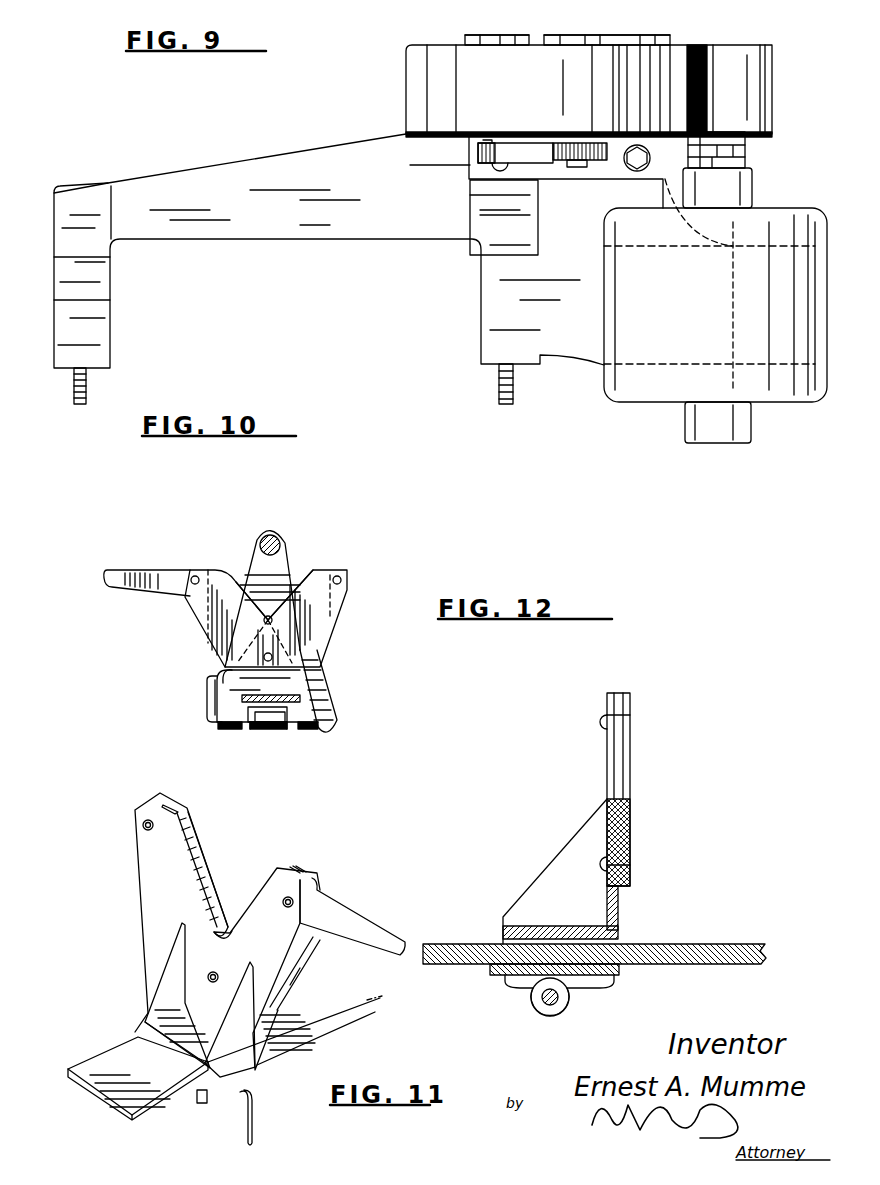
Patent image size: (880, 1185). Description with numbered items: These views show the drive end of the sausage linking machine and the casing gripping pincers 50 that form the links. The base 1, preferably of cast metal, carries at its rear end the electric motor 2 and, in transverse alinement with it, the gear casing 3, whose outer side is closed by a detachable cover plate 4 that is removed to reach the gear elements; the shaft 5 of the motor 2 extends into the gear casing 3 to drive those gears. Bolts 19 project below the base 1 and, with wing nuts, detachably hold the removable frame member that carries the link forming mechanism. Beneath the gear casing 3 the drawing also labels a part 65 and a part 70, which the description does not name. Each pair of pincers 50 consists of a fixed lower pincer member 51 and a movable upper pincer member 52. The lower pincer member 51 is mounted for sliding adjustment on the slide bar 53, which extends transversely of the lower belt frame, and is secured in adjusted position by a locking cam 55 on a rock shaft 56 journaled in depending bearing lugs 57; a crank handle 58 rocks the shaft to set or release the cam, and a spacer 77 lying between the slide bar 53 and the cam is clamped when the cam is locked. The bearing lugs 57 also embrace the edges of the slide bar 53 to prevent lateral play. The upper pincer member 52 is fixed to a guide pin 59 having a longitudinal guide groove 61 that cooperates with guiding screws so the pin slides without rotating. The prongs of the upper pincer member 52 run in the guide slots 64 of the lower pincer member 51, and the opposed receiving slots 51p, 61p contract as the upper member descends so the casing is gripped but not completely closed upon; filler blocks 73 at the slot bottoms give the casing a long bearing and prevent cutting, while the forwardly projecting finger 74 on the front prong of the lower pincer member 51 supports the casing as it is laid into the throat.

In FIG. 9, the base 1 is at (338, 229).
In FIG. 9, the electric motor 2 is at (676, 339).
In FIG. 9, the gear casing 3 is at (589, 86).
In FIG. 9, the detachable cover plate 4 is at (447, 50).
In FIG. 9, the motor shaft 5 is at (745, 163).
In FIG. 9, the bolts 19 is at (79, 407).
In FIG. 9, the bushing 65 is at (482, 158).
In FIG. 9, the knurled nut 70 is at (587, 167).
In FIG. 10, the pincers 50 is at (249, 561).
In FIG. 10, the lower pincer member 51 is at (337, 595).
In FIG. 11, the lower pincer member 51 is at (157, 927).
In FIG. 12, the lower pincer member 51 is at (570, 850).
In FIG. 10, the receiving slot 51p is at (277, 593).
In FIG. 10, the upper pincer member 52 is at (262, 568).
In FIG. 10, the slide bar 53 is at (297, 700).
In FIG. 11, the slide bar 53 is at (323, 1010).
In FIG. 12, the slide bar 53 is at (661, 953).
In FIG. 10, the locking cam 55 is at (270, 728).
In FIG. 12, the locking cam 55 is at (543, 992).
In FIG. 10, the rock shaft 56 is at (293, 728).
In FIG. 12, the rock shaft 56 is at (548, 1012).
In FIG. 10, the bearing lug 57 is at (227, 728).
In FIG. 10, the crank handle 58 is at (210, 697).
In FIG. 11, the crank handle 58 is at (255, 1126).
In FIG. 10, the guide pin 59 is at (287, 542).
In FIG. 10, the longitudinal guide groove 61 is at (272, 532).
In FIG. 10, the receiving slot 61p is at (291, 690).
In FIG. 10, the guide slot 64 is at (208, 612).
In FIG. 11, the guide slot 64 is at (193, 853).
In FIG. 12, the guide slot 64 is at (619, 746).
In FIG. 10, the filler block 73 is at (260, 637).
In FIG. 10, the finger 74 is at (125, 583).
In FIG. 11, the finger 74 is at (373, 923).
In FIG. 10, the spacer 77 is at (247, 725).
In FIG. 11, the spacer 77 is at (203, 1105).
In FIG. 12, the spacer 77 is at (487, 968).